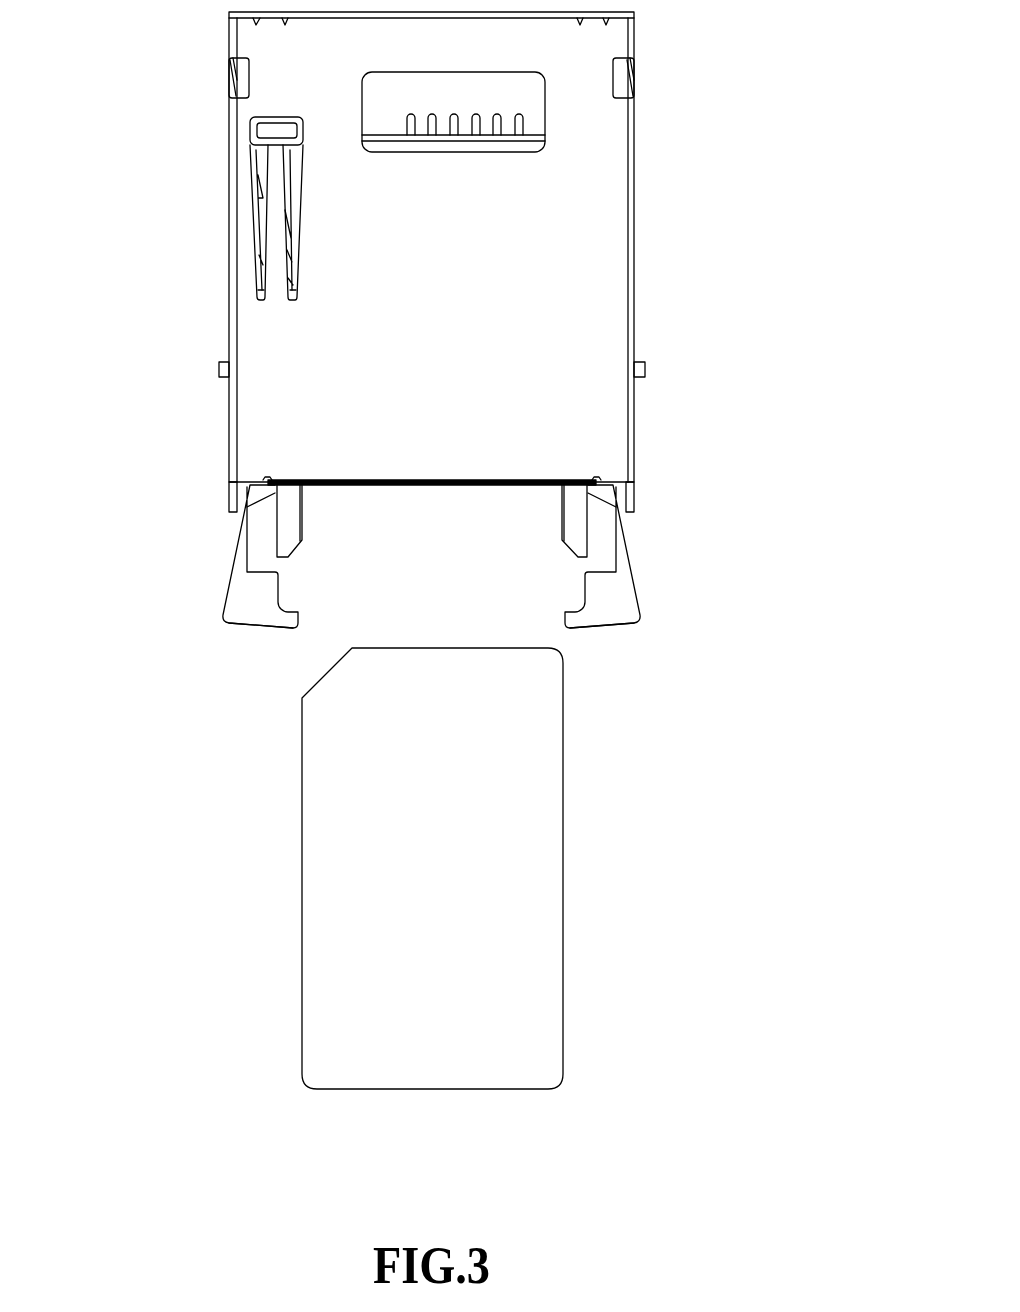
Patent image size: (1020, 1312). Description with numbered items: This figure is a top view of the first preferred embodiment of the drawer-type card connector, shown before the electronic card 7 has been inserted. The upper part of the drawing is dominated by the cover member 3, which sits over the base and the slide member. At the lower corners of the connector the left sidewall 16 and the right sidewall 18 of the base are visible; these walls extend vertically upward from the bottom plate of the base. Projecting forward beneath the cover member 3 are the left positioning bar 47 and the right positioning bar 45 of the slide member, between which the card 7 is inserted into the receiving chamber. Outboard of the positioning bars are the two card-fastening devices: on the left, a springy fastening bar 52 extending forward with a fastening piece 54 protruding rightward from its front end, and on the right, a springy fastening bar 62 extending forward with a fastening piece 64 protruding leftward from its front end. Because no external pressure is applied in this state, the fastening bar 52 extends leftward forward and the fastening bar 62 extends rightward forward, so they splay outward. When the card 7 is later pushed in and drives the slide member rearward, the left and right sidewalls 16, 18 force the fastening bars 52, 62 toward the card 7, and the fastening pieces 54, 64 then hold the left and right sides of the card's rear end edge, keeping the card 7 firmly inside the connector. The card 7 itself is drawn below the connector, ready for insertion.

The cover member 3 is at (452, 297).
The electronic card 7 is at (455, 978).
The left sidewall 16 is at (233, 492).
The right sidewall 18 is at (628, 494).
The right positioning bar 45 is at (575, 520).
The left positioning bar 47 is at (287, 512).
The fastening bar 52 is at (235, 535).
The fastening piece 54 is at (285, 617).
The fastening bar 62 is at (625, 540).
The fastening piece 64 is at (585, 618).